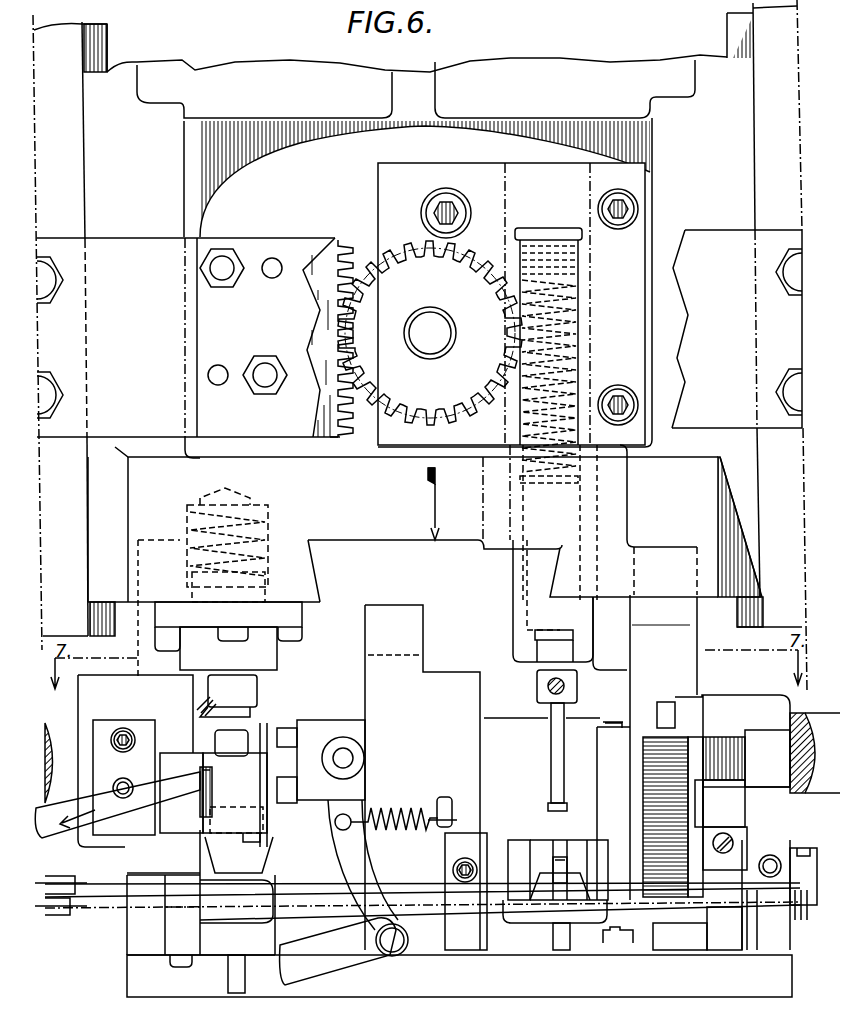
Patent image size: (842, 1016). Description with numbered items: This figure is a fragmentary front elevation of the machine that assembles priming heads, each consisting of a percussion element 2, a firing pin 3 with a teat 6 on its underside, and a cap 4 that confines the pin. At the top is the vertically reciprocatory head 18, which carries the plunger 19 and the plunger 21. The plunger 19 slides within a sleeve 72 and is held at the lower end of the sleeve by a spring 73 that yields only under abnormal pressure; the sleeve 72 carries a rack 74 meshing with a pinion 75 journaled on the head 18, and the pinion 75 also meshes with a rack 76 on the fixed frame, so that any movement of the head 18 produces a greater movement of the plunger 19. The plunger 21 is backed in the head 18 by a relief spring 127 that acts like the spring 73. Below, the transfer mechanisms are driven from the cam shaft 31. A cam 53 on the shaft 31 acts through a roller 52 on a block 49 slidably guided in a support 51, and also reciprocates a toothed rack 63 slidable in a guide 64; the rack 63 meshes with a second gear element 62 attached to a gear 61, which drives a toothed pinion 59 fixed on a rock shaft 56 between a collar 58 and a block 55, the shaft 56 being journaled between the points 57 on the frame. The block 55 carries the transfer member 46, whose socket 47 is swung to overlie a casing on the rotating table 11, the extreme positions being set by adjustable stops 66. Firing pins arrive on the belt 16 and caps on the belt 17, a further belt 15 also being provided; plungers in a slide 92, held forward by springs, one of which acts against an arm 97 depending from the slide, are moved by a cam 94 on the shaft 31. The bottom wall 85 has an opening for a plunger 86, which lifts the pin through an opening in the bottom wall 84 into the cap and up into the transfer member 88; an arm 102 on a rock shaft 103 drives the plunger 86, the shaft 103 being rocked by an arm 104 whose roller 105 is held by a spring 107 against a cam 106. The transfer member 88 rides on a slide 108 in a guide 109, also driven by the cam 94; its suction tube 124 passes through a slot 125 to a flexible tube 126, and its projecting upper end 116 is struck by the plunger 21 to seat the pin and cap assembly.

The vertically reciprocatory head 18 is at (275, 62).
The rack 76 is at (322, 245).
The gear or pinion 75 is at (408, 248).
The rack 74 is at (515, 395).
The spring 73 is at (568, 312).
The sleeve 72 is at (520, 607).
The relief spring 127 is at (195, 505).
The cam 106 is at (391, 605).
The cam 94 is at (145, 638).
The guide 109 is at (150, 690).
The plunger 21 is at (248, 683).
The projecting upper end of plunger 116 is at (236, 742).
The roller 105 is at (343, 737).
The slide 92 is at (297, 736).
The arm 97 is at (290, 771).
The spring 107 is at (398, 801).
The plunger 19 is at (551, 744).
The roller 52 is at (633, 730).
The cam 53 is at (688, 663).
The gear 61 is at (660, 770).
The toothed rack 63 is at (728, 755).
The guide 64 is at (752, 758).
The second gear element 62 is at (703, 798).
The toothed pinion 59 is at (692, 846).
The rock shaft 56 is at (742, 852).
The journal points 57 is at (497, 862).
The cam shaft 31 is at (50, 733).
The flexible tube 126 is at (112, 778).
The tube 124 is at (208, 785).
The slot 125 is at (208, 797).
The transfer member 88 is at (238, 826).
The slide 108 is at (169, 836).
The arm 104 is at (332, 847).
The endless conveyer belt 15 is at (60, 878).
The endless conveyer belt 17 is at (36, 883).
The endless conveyer belt 16 is at (42, 908).
The cap 4 is at (64, 878).
The firing pin 3 is at (64, 887).
The teat 6 is at (61, 908).
The bottom wall 84 is at (175, 893).
The bottom wall 85 is at (175, 907).
The table 11 is at (200, 905).
The plunger 86 is at (228, 968).
The arm 102 is at (342, 960).
The rock shaft 103 is at (396, 945).
The socket 47 is at (555, 905).
The transfer member 46 is at (592, 855).
The percussion element 2 is at (562, 868).
The block 55 is at (518, 840).
The block 49 is at (545, 840).
The adjustable stops 66 is at (603, 941).
The support 51 is at (660, 946).
The collar 58 is at (725, 950).